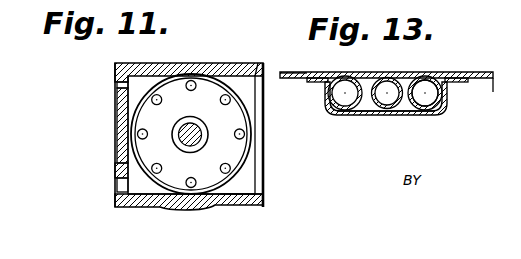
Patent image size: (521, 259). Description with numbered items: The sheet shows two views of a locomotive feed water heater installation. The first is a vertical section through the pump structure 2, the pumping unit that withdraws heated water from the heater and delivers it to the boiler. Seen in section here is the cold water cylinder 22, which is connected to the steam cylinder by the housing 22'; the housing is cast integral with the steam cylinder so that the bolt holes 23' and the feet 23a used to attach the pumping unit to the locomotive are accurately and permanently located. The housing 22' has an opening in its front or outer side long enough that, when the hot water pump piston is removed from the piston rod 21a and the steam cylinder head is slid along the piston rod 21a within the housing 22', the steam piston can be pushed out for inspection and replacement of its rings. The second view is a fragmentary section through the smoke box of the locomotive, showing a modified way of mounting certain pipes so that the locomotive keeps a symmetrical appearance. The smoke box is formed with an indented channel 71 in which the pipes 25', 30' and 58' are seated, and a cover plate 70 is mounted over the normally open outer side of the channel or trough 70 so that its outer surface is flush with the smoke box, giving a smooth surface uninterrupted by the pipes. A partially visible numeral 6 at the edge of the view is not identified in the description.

In FIG. 11, the pump structure 2 is at (247, 178).
In FIG. 11, the piston rod 21a is at (207, 141).
In FIG. 11, the cold water cylinder 22 is at (189, 216).
In FIG. 11, the housing 22' is at (241, 215).
In FIG. 11, the bolt holes 23' is at (95, 129).
In FIG. 11, the feet 23a is at (117, 92).
In FIG. 13, the indented channel 71 is at (433, 71).
In FIG. 13, the frame 6 is at (480, 71).
In FIG. 13, the cover plate 70 is at (418, 116).
In FIG. 13, the pipe 25' is at (386, 129).
In FIG. 13, the pipe 58' is at (385, 117).
In FIG. 13, the pipe 30' is at (447, 99).